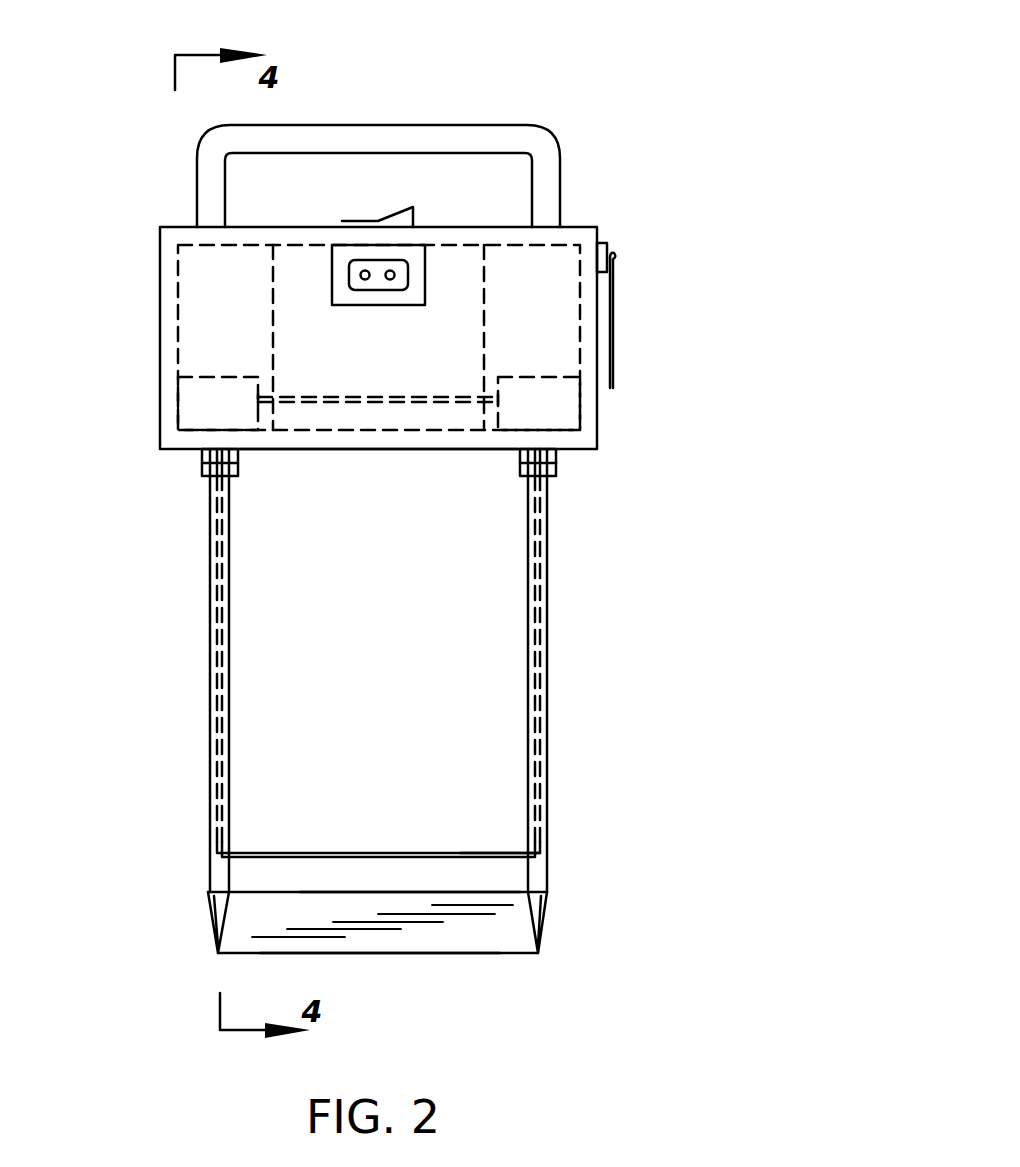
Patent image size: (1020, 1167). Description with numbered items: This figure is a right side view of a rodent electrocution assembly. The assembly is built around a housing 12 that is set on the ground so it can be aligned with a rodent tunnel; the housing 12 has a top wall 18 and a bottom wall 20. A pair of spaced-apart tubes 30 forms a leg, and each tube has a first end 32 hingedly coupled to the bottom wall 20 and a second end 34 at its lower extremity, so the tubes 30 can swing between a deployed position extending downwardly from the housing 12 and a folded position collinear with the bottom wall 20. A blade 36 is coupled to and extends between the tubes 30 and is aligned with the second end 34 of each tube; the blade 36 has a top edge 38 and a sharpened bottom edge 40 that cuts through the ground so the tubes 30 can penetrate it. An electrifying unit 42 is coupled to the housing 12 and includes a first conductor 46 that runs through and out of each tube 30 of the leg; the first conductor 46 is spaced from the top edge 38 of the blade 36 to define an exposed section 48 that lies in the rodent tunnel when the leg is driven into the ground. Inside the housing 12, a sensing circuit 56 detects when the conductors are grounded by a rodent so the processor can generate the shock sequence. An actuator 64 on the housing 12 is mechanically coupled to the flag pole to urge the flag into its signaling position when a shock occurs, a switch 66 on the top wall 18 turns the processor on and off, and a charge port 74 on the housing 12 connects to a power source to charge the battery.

The housing 12 is at (160, 223).
The top wall 18 is at (580, 225).
The bottom wall 20 is at (370, 449).
The tubes 30 is at (229, 653).
The first end 32 is at (537, 453).
The second end 34 is at (537, 892).
The blade 36 is at (427, 937).
The top edge 38 is at (480, 892).
The bottom edge 40 is at (492, 952).
The electrifying unit 42 is at (279, 828).
The first conductor 46 is at (538, 700).
The exposed section 48 is at (467, 853).
The sensing circuit 56 is at (527, 373).
The actuator 64 is at (607, 243).
The switch 66 is at (413, 207).
The charge port 74 is at (332, 272).